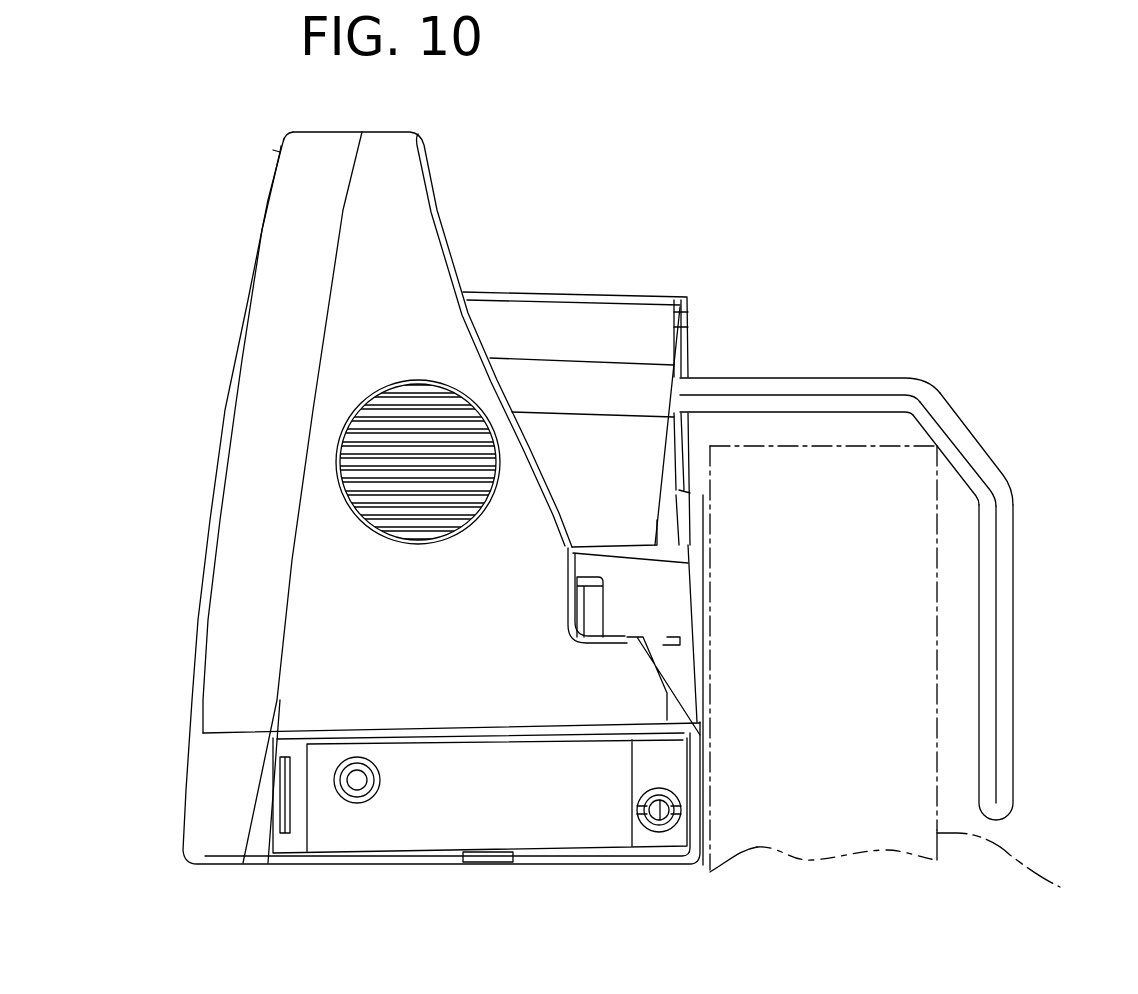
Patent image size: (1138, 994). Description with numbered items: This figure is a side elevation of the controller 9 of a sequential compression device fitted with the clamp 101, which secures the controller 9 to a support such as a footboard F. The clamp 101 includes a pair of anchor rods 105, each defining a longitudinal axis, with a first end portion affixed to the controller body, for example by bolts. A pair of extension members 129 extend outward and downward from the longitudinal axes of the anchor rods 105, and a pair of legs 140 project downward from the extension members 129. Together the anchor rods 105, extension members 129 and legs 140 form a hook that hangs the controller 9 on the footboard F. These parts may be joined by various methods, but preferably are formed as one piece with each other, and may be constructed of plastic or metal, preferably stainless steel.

The controller 9 is at (602, 191).
The clamp 101 is at (907, 540).
The anchor rod 105 is at (835, 390).
The extension member 129 is at (975, 463).
The leg 140 is at (1002, 645).
The footboard F is at (1060, 887).